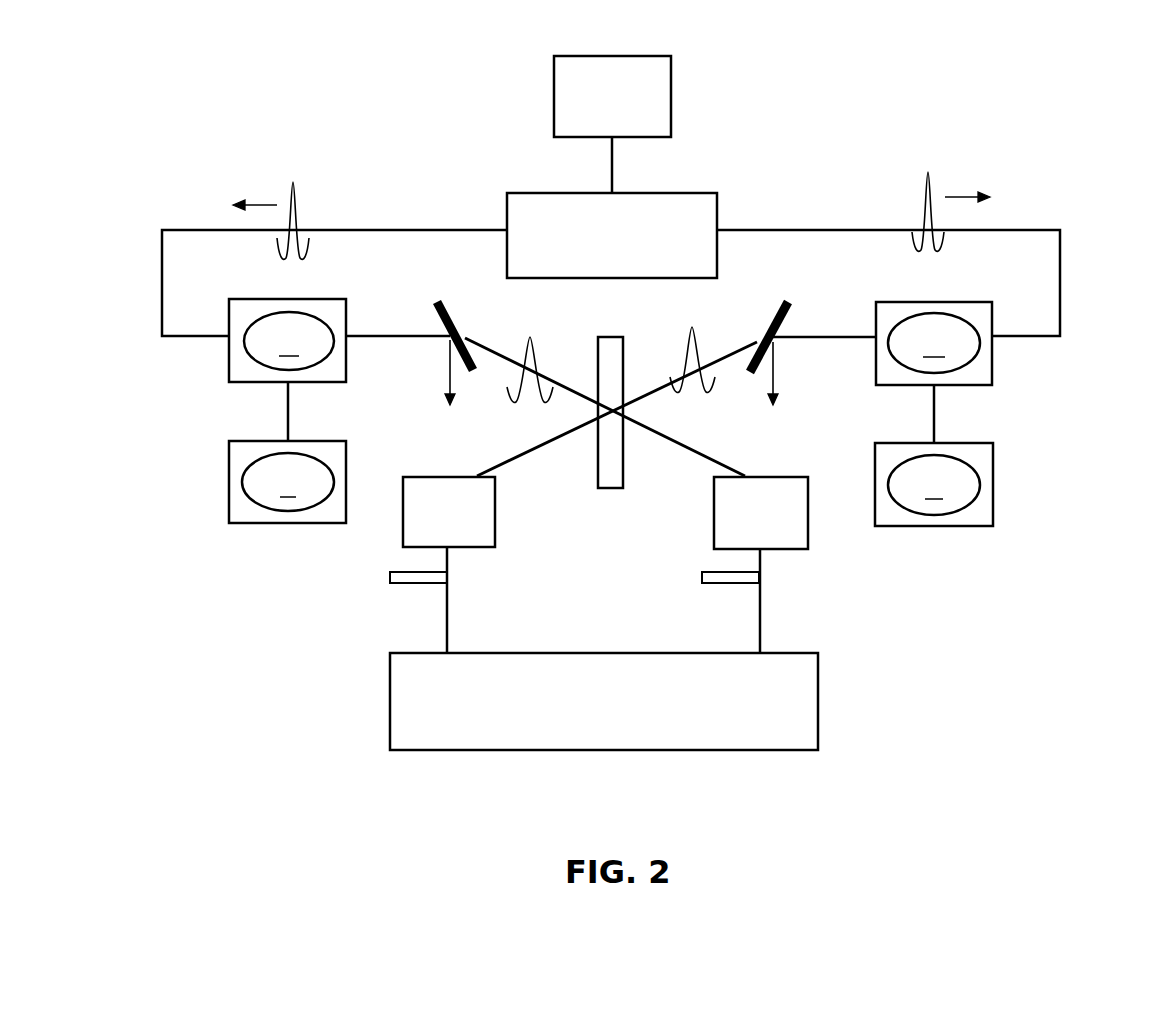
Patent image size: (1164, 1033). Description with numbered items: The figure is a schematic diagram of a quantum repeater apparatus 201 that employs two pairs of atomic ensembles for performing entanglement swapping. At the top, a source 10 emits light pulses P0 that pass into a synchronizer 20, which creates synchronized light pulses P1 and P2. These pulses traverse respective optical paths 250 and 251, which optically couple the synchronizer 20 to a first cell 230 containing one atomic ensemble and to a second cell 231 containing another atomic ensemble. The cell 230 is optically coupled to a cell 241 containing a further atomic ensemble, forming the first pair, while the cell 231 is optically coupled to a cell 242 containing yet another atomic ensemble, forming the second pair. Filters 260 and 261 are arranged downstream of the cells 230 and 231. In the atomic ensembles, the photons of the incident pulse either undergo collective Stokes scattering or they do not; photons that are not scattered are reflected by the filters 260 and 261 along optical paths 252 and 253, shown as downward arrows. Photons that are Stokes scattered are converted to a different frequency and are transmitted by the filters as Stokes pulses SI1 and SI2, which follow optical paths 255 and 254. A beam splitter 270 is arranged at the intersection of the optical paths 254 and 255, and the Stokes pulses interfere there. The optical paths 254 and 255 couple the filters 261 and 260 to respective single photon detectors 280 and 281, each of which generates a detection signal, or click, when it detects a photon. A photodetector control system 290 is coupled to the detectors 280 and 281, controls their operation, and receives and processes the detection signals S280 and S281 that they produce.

The source 10 is at (597, 111).
The synchronizer 20 is at (597, 252).
The quantum repeater apparatus 201 is at (1036, 121).
The cell 230 is at (267, 298).
The cell 231 is at (993, 372).
The cell 241 is at (228, 498).
The cell 242 is at (993, 502).
The optical path 250 is at (198, 337).
The optical path 251 is at (1062, 292).
The optical path 252 is at (447, 385).
The optical path 253 is at (770, 387).
The optical path 254 is at (520, 457).
The optical path 255 is at (703, 455).
The filter 260 is at (440, 300).
The filter 261 is at (786, 298).
The beam splitter 270 is at (597, 345).
The SPD 280 is at (427, 528).
The SPD 281 is at (739, 528).
The photodetector control system 290 is at (581, 716).
The light pulses P0 is at (605, 180).
The synchronized light pulse P1 is at (290, 195).
The synchronized light pulse P2 is at (923, 183).
The Stokes pulse SI1 is at (537, 398).
The Stokes pulse SI2 is at (692, 333).
The detection signal S280 is at (390, 573).
The detection signal S281 is at (702, 575).